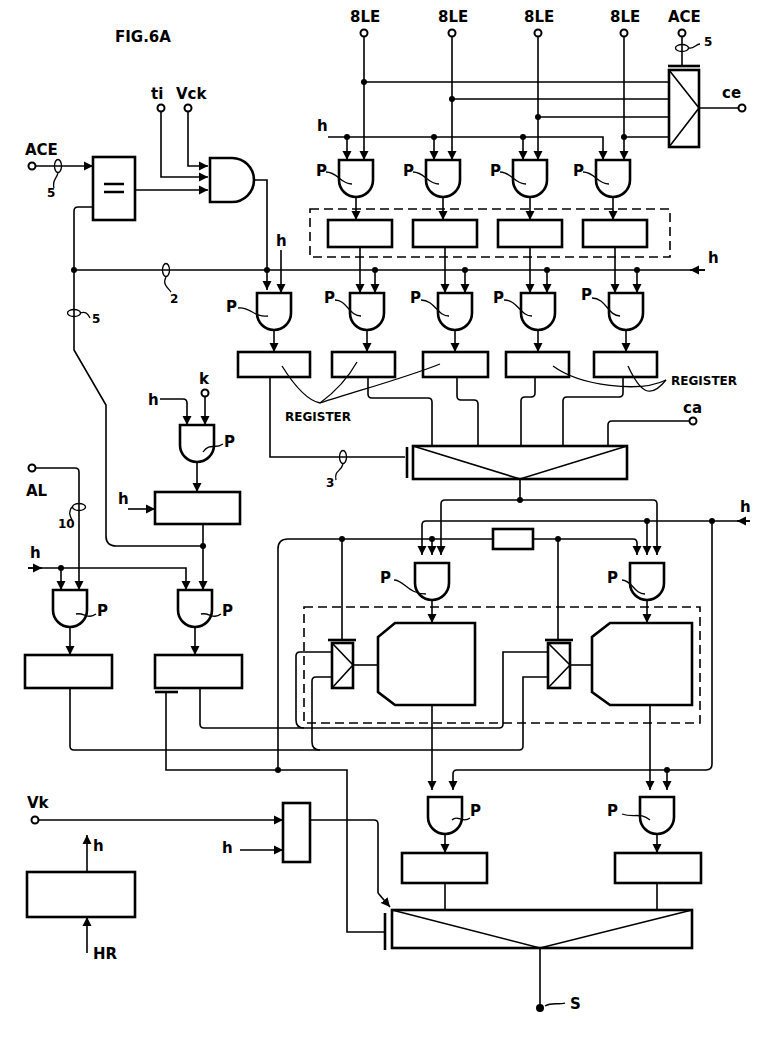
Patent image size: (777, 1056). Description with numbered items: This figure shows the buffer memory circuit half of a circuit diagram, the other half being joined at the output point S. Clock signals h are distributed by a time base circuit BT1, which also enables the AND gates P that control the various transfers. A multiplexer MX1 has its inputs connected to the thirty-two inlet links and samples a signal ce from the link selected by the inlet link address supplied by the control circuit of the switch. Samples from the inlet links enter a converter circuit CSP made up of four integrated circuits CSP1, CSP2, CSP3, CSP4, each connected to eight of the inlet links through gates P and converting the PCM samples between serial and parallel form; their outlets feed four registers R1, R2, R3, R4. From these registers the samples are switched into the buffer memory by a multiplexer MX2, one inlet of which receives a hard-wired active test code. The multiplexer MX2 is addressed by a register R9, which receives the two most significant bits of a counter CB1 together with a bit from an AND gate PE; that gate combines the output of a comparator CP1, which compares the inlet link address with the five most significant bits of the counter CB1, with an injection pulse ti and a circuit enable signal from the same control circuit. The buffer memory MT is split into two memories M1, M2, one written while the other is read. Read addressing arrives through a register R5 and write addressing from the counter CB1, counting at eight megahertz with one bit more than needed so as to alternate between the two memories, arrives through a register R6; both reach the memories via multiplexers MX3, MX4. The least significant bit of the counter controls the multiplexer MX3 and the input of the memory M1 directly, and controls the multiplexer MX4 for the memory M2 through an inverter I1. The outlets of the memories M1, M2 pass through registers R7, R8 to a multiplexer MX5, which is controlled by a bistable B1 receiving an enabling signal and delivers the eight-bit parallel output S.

The comparator CP1 is at (114, 172).
The AND gate PE is at (222, 168).
The multiplexer MX1 is at (690, 148).
The converter circuit CSP is at (670, 233).
The integrated circuit CSP1 is at (346, 234).
The integrated circuit CSP2 is at (432, 234).
The integrated circuit CSP3 is at (517, 234).
The integrated circuit CSP4 is at (602, 234).
The register R9 is at (264, 362).
The register R1 is at (357, 362).
The register R2 is at (445, 362).
The register R3 is at (528, 362).
The register R4 is at (613, 362).
The multiplexer MX2 is at (628, 466).
The counter CB1 is at (238, 511).
The inverter I1 is at (515, 549).
The buffer memory MT is at (680, 606).
The multiplexer MX3 is at (338, 650).
The multiplexer MX4 is at (549, 655).
The memory M1 is at (400, 690).
The memory M2 is at (622, 688).
The register R5 is at (62, 688).
The register R6 is at (220, 688).
The register R7 is at (488, 869).
The register R8 is at (615, 869).
The bistable B1 is at (297, 862).
The time base circuit BT1 is at (118, 902).
The multiplexer MX5 is at (690, 932).